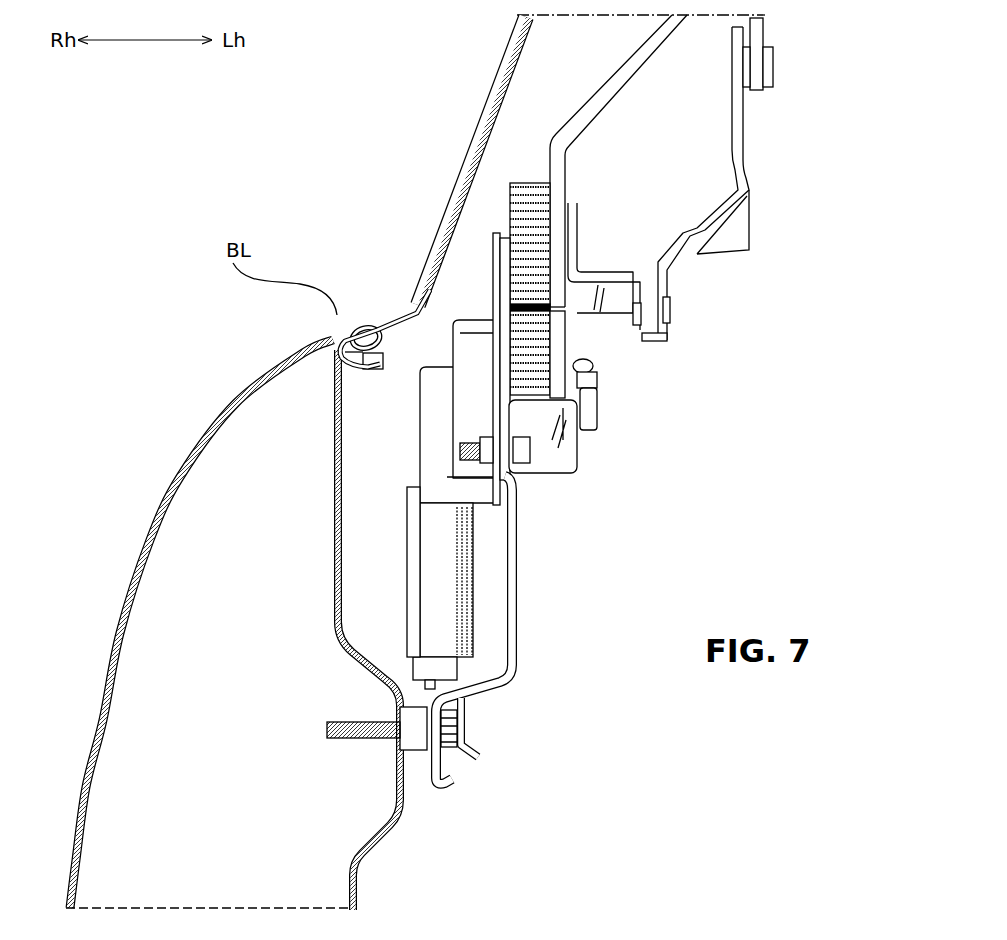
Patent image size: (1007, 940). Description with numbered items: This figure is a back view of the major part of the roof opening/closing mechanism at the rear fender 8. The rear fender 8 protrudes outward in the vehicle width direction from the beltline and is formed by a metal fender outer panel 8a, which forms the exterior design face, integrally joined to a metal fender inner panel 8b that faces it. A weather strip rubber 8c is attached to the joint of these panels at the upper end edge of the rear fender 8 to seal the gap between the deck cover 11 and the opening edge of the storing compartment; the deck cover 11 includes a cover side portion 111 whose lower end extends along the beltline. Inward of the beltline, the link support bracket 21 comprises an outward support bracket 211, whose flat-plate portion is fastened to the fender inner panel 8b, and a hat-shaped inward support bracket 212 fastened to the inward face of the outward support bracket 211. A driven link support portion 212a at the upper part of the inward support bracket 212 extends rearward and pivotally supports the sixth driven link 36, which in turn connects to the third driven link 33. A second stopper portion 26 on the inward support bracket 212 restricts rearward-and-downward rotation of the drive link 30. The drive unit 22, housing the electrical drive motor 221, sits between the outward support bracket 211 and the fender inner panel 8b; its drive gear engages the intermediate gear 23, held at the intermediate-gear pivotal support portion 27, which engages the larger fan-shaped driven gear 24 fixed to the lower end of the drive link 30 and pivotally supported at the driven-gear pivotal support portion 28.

The rear fender 8 is at (238, 401).
The fender outer panel 8a is at (178, 477).
The fender inner panel 8b is at (344, 433).
The weather strip rubber 8c is at (386, 348).
The deck cover 11 is at (395, 192).
The cover side portion 111 is at (383, 320).
The link support bracket 21 is at (522, 633).
The outward support bracket 211 is at (519, 563).
The inward support bracket 212 is at (568, 447).
The driven link support portion 212a is at (615, 300).
The drive unit 22 is at (405, 619).
The drive motor 221 is at (412, 573).
The intermediate gear 23 is at (551, 343).
The driven gear 24 is at (506, 191).
The second stopper portion 26 is at (602, 403).
The intermediate-gear pivotal support portion 27 is at (586, 351).
The driven-gear pivotal support portion 28 is at (493, 262).
The drive link 30 is at (625, 100).
The third driven link 33 is at (767, 31).
The sixth driven link 36 is at (752, 253).